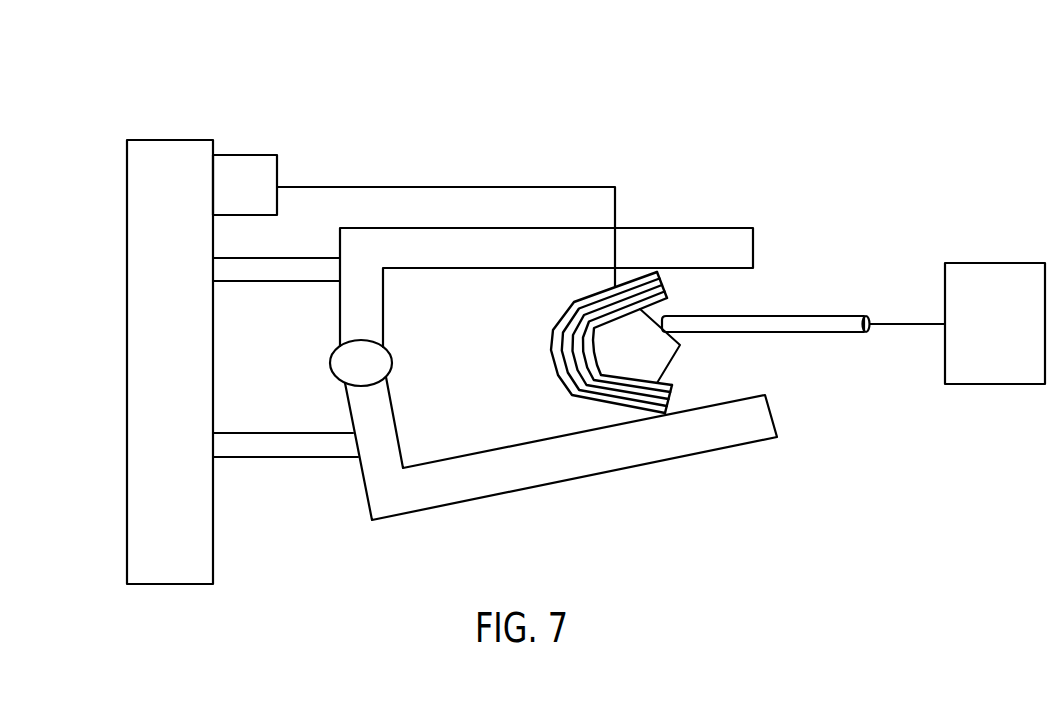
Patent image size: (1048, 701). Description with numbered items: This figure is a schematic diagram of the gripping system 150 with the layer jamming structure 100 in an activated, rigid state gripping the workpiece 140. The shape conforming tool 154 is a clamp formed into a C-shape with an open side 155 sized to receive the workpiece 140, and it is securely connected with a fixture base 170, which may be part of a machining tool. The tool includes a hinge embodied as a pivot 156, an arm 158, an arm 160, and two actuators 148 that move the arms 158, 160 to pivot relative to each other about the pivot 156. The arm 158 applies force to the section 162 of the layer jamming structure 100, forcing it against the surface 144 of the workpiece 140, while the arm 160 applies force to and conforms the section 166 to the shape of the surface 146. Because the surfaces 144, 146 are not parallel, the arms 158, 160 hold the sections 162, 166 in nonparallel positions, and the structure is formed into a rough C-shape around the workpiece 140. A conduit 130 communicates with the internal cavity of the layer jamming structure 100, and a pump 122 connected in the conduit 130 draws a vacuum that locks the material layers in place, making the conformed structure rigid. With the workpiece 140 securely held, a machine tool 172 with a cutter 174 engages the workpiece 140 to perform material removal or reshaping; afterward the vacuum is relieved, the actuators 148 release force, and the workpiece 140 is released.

The layer jamming structure 100 is at (550, 347).
The pump 122 is at (268, 196).
The conduit 130 is at (382, 185).
The workpiece 140 is at (655, 359).
The surface 144 is at (592, 300).
The surface 146 is at (613, 393).
The actuator 148 is at (291, 257).
The gripping system 150 is at (566, 79).
The shape conforming tool 154 is at (457, 505).
The open side 155 is at (745, 290).
The pivot 156 is at (338, 353).
The arm 158 is at (658, 228).
The arm 160 is at (617, 470).
The section 162 is at (628, 280).
The section 166 is at (593, 408).
The fixture base 170 is at (190, 354).
The machine tool 172 is at (1017, 334).
The cutter 174 is at (802, 315).